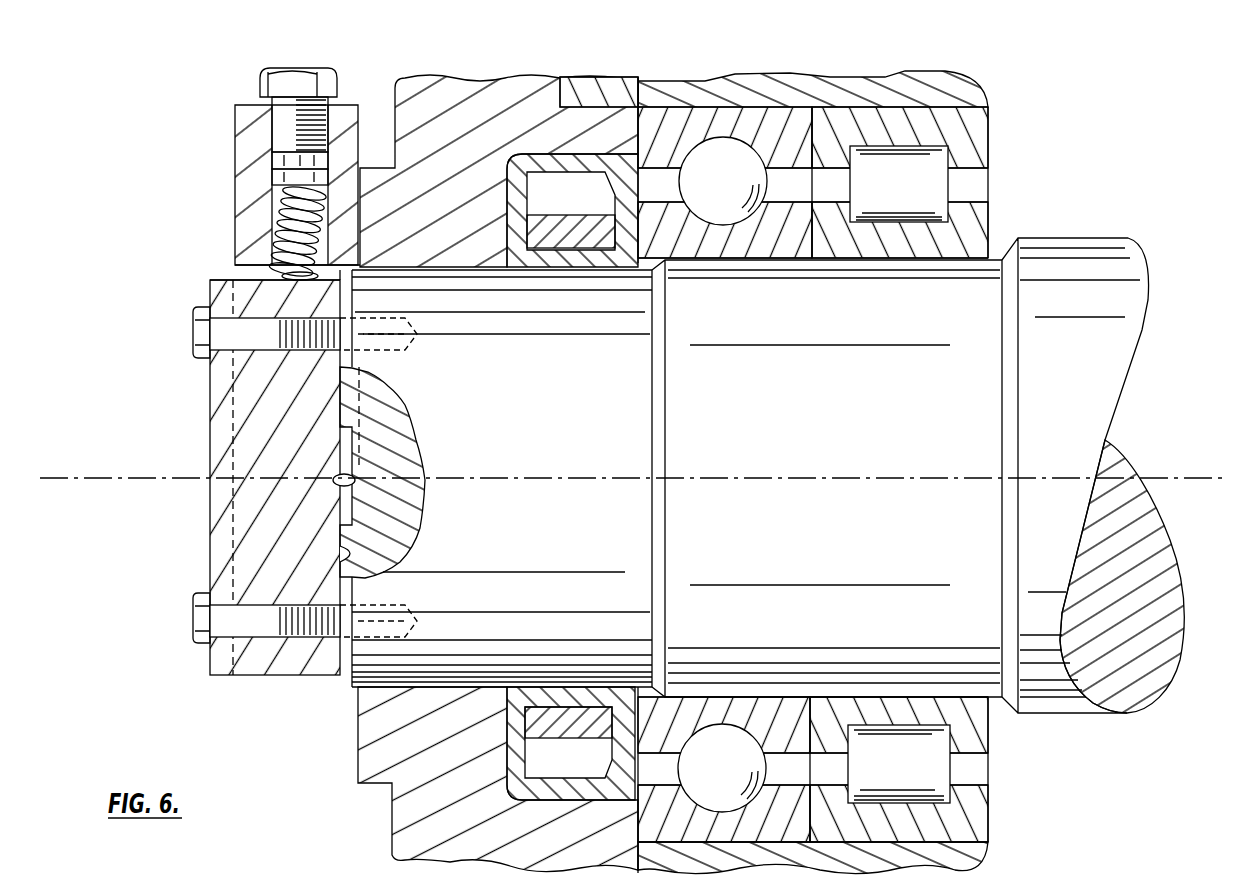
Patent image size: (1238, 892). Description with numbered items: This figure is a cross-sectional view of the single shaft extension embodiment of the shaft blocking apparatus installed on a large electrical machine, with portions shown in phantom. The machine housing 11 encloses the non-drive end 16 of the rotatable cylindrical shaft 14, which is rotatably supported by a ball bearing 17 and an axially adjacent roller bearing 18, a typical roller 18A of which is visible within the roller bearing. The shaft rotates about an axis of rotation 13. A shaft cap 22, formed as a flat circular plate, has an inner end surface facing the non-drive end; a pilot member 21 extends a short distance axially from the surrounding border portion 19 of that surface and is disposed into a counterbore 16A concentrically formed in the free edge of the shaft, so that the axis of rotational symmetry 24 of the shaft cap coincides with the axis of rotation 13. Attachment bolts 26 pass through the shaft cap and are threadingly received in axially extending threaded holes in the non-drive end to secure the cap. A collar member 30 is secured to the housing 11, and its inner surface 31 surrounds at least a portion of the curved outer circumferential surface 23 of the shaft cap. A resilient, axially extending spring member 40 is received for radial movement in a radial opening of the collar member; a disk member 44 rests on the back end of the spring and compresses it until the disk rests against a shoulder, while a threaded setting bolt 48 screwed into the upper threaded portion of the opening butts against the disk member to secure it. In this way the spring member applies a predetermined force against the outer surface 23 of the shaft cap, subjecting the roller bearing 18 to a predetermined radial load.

The housing 11 is at (423, 123).
The axis of rotation 13 is at (1160, 478).
The rotatable cylindrical shaft 14 is at (1135, 363).
The non-drive end 16 is at (843, 400).
The counterbore 16A is at (340, 487).
The ball bearing 17 is at (777, 120).
The roller bearing 18 is at (980, 134).
The roller 18A is at (908, 165).
The border portion 19 is at (348, 545).
The pilot member 21 is at (352, 447).
The shaft cap 22 is at (210, 516).
The outer circumferential surface 23 is at (230, 278).
The axis of rotational symmetry 24 is at (70, 472).
The attachment bolts 26 is at (193, 350).
The collar member 30 is at (252, 108).
The inner surface 31 is at (240, 266).
The spring member 40 is at (283, 205).
The disk member 44 is at (323, 176).
The setting bolt 48 is at (260, 82).